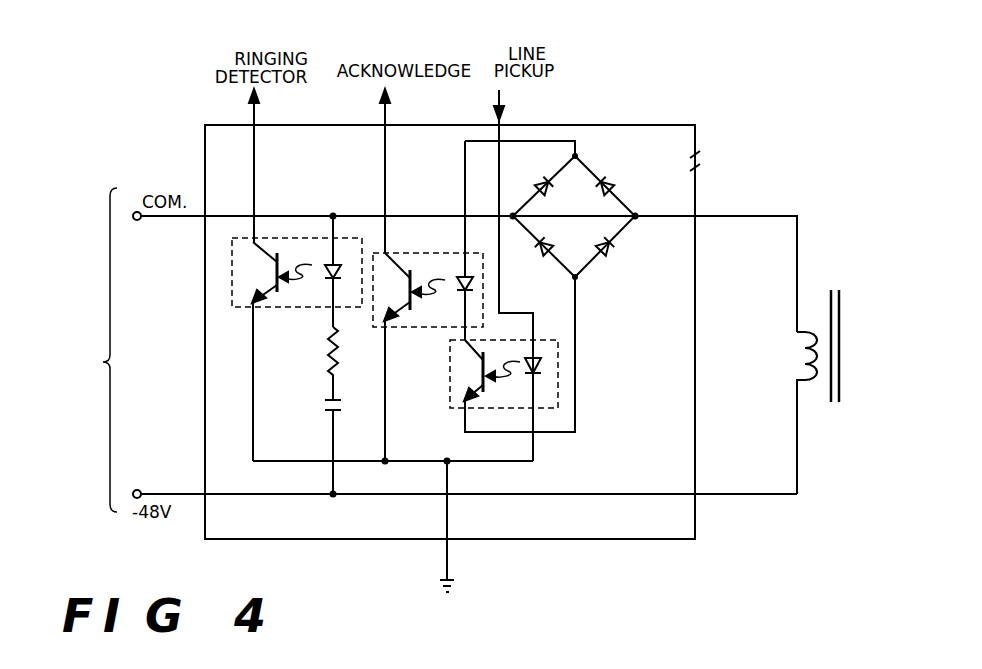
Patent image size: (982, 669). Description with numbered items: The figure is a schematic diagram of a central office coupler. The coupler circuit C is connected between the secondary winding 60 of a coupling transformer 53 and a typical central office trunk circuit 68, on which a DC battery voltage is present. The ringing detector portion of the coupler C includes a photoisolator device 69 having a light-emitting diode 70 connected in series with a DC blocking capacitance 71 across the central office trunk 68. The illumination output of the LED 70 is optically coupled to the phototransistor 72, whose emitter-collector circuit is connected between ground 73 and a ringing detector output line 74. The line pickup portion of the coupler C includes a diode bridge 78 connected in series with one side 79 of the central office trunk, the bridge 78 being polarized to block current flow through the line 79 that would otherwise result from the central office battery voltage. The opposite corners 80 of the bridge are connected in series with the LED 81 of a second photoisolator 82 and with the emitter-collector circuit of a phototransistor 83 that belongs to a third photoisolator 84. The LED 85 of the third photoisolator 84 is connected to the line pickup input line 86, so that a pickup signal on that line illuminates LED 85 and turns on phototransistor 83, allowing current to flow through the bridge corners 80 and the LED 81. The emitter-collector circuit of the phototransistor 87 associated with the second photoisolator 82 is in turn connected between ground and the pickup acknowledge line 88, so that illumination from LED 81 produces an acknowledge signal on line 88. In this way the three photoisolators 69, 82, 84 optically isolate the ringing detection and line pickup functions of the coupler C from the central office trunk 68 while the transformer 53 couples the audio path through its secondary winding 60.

The coupler circuit C is at (642, 121).
The coupling transformer 53 is at (843, 398).
The secondary winding 60 is at (808, 351).
The central office trunk circuit 68 is at (110, 318).
The photoisolator device 69 is at (238, 307).
The light-emitting diode 70 is at (326, 262).
The DC blocking capacitance 71 is at (338, 411).
The phototransistor 72 is at (274, 262).
The ground 73 is at (449, 483).
The ringing detector output line 74 is at (258, 117).
The diode bridge 78 is at (613, 196).
The one side of the central office trunk 79 is at (657, 220).
The opposite corners of the bridge 80 is at (574, 268).
The LED 81 is at (471, 275).
The second photoisolator 82 is at (433, 257).
The phototransistor 83 is at (478, 370).
The third photoisolator 84 is at (450, 400).
The LED 85 is at (540, 368).
The line pickup input line 86 is at (503, 118).
The phototransistor 87 is at (392, 311).
The pickup acknowledge line 88 is at (388, 117).